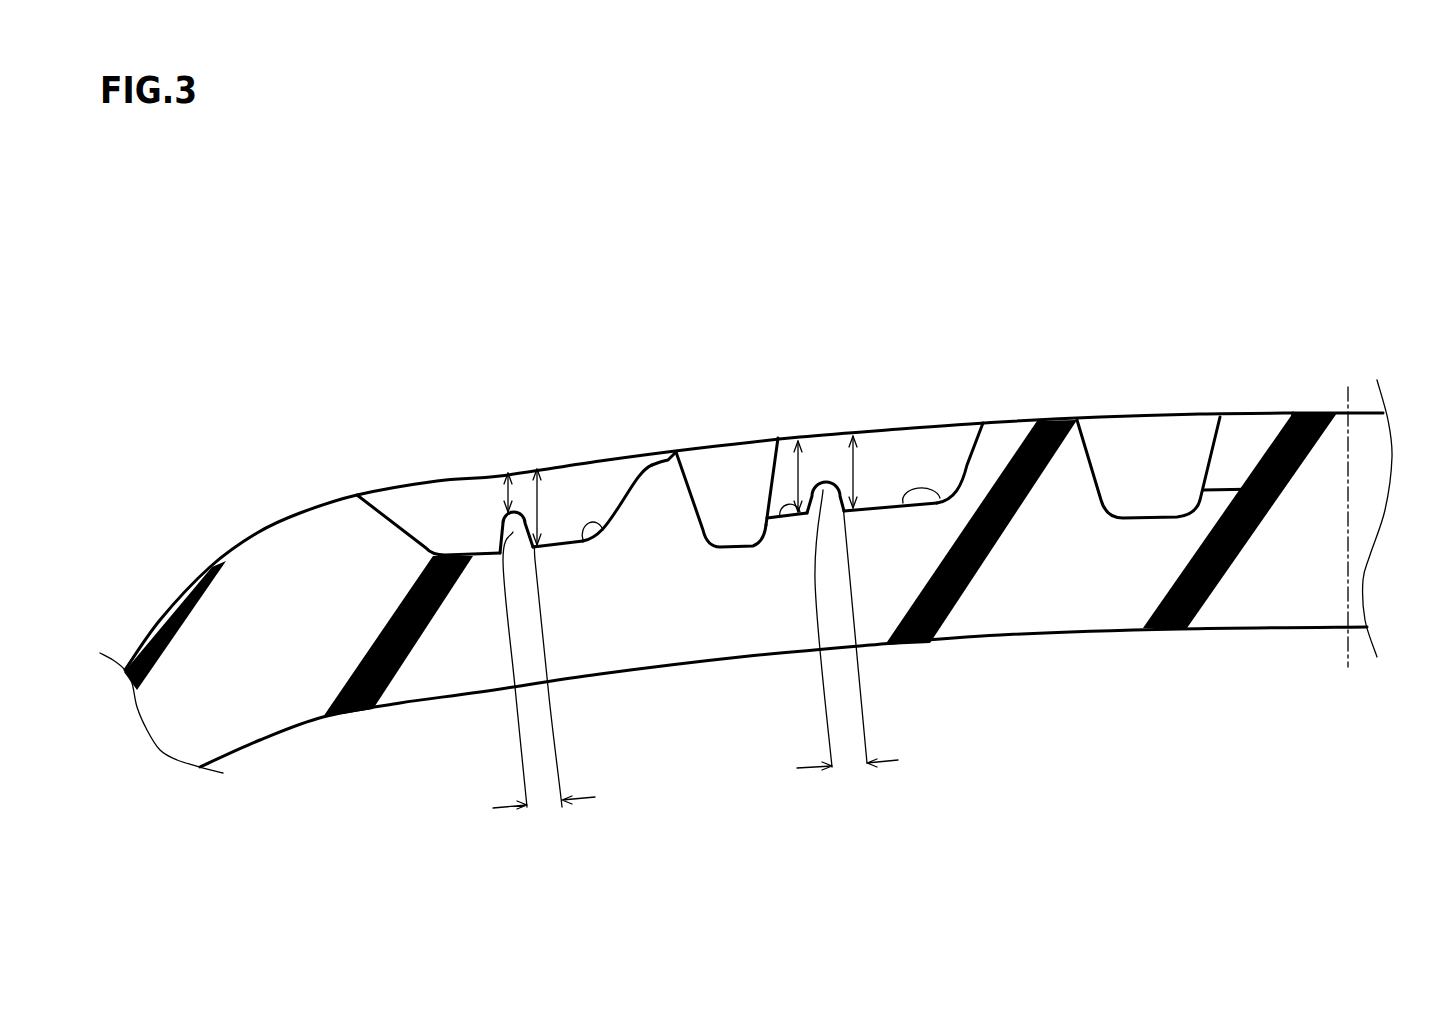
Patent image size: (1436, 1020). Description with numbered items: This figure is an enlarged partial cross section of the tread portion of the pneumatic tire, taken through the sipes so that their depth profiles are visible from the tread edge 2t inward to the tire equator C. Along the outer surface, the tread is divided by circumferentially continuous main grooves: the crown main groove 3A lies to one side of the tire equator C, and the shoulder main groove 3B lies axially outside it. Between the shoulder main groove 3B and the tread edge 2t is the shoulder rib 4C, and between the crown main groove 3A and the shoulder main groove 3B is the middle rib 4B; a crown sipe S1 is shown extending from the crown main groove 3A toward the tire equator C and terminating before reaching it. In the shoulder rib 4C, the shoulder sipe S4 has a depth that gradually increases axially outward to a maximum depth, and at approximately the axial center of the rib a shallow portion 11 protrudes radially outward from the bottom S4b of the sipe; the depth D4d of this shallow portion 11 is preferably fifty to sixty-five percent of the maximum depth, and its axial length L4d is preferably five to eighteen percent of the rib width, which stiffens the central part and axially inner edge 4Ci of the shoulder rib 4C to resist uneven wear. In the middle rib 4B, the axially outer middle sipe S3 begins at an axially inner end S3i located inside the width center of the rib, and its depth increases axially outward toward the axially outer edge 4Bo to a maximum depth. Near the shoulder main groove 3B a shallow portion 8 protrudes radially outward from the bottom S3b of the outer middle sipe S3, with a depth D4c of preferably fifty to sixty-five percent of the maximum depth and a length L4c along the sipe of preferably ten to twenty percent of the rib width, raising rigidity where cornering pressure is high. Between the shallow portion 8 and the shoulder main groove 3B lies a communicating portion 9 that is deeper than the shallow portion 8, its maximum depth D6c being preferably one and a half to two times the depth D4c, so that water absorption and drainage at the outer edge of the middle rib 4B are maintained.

The tread edge 2t is at (257, 533).
The shoulder rib 4C is at (437, 479).
The shallow portion 11 is at (513, 532).
The shoulder sipe S4 is at (587, 498).
The bottom of the shoulder sipe S4b is at (607, 528).
The axially inner edge of the shoulder rib 4Ci is at (673, 452).
The depth of the shallow portion D4d is at (512, 511).
The axial length of the shallow portion L4d is at (544, 687).
The shoulder main groove 3B is at (723, 471).
The axially outer edge of the middle rib 4Bo is at (780, 437).
The middle rib 4B is at (898, 425).
The shallow portion 8 is at (823, 490).
The communicating portion 9 is at (775, 520).
The axially outer middle sipe S3 is at (930, 475).
The axially inner end of the outer middle sipe S3i is at (983, 423).
The bottom of the outer middle sipe S3b is at (927, 492).
The depth of the shallow portion D4c is at (823, 480).
The maximum depth of the communicating portion D6c is at (800, 458).
The length of the shallow portion L4c is at (847, 645).
The crown main groove 3A is at (1127, 450).
The crown sipe S1 is at (1260, 466).
The tire equator C is at (1348, 512).